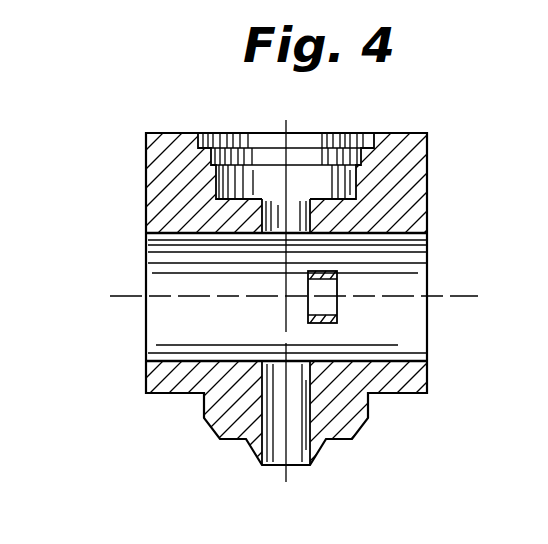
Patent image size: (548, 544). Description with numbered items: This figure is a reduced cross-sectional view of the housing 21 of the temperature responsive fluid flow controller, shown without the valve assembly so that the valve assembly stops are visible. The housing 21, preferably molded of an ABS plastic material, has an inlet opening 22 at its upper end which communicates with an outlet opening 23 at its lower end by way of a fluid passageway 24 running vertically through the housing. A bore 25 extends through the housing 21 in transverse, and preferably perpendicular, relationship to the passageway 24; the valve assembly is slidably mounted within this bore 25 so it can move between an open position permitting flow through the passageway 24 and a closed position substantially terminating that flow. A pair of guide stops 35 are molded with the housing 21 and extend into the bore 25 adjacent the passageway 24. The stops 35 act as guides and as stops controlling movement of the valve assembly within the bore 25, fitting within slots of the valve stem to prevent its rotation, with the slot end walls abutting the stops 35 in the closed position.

The housing 21 is at (136, 215).
The inlet opening 22 is at (327, 150).
The outlet opening 23 is at (273, 467).
The fluid passageway 24 is at (272, 207).
The bore 25 is at (427, 243).
The guide stops 35 is at (307, 300).